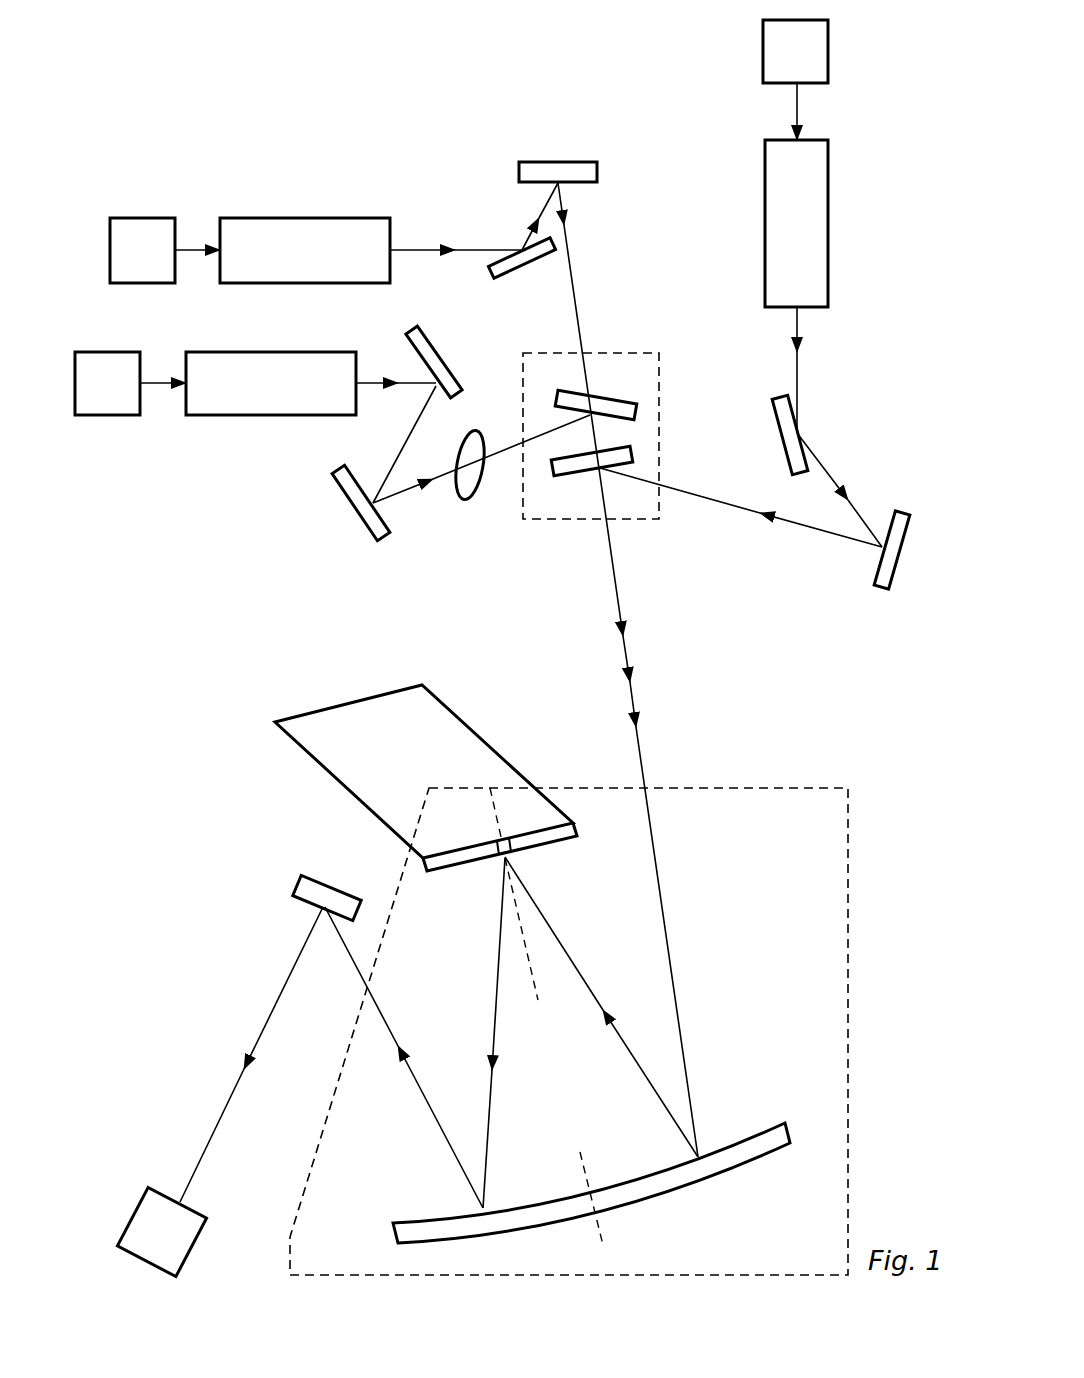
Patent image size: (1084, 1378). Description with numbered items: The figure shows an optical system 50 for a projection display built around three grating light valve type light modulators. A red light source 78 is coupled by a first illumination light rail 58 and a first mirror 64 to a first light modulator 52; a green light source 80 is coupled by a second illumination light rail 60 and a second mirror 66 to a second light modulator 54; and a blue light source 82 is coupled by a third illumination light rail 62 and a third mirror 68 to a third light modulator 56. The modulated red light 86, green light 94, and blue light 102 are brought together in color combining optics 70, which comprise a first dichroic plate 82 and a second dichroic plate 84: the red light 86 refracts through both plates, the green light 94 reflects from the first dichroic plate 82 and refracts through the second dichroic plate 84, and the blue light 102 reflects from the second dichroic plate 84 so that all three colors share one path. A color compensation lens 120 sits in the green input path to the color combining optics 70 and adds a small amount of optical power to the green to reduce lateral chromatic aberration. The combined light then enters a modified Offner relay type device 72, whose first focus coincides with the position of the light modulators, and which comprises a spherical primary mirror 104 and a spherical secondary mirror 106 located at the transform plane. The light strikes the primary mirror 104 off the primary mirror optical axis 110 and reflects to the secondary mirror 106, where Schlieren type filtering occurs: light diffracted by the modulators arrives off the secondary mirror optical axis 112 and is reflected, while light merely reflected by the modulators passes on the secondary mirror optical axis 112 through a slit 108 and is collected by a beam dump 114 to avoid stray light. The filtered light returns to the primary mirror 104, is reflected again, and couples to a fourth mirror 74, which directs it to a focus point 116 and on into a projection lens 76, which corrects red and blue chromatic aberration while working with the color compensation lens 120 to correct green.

The optical system 50 is at (222, 78).
The first light modulator 52 is at (560, 162).
The second light modulator 54 is at (352, 506).
The third light modulator 56 is at (905, 552).
The first illumination light rail 58 is at (312, 218).
The second illumination light rail 60 is at (278, 352).
The third illumination light rail 62 is at (829, 199).
The first mirror 64 is at (528, 266).
The second mirror 66 is at (438, 348).
The third mirror 68 is at (772, 420).
The color combining optics 70 is at (604, 353).
The modified Offner relay type device 72 is at (850, 810).
The fourth mirror 74 is at (318, 876).
The projection lens 76 is at (208, 1238).
The red light source 78 is at (148, 218).
The green light source 80 is at (112, 352).
The blue light source / first dichroic plate 82 is at (829, 52).
The second dichroic plate 84 is at (578, 474).
The red light 86 is at (573, 264).
The green light 94 is at (410, 492).
The blue light 102 is at (782, 522).
The primary mirror 104 is at (808, 1117).
The secondary mirror 106 is at (580, 828).
The slit 108 is at (497, 842).
The primary mirror optical axis 110 is at (600, 1228).
The secondary mirror optical axis 112 is at (536, 1004).
The beam dump 114 is at (337, 700).
The focus point 116 is at (182, 1200).
The color compensation lens 120 is at (476, 500).